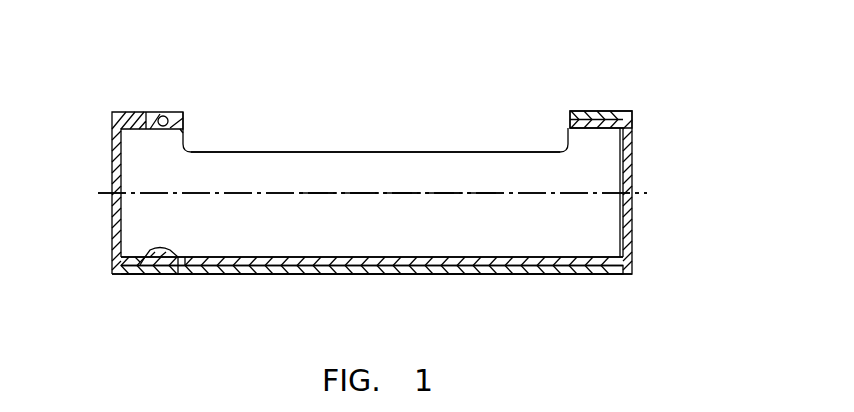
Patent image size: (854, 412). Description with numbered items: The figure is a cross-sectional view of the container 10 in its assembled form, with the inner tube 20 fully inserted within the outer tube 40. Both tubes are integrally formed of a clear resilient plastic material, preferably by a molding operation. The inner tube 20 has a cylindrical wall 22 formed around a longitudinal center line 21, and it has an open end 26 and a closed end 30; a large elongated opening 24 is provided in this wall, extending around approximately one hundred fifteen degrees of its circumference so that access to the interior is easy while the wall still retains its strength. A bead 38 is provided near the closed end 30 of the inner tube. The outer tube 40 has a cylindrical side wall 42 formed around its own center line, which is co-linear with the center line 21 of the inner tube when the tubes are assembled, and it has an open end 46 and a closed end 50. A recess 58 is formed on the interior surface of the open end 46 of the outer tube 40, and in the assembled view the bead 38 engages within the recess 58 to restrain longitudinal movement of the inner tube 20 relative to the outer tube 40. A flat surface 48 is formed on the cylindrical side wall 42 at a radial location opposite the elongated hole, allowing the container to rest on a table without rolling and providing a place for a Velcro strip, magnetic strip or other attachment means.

The container 10 is at (579, 110).
The inner tube 20 is at (124, 92).
The longitudinal center line 21 is at (532, 193).
The cylindrical wall 22 is at (327, 263).
The elongated opening 24 is at (347, 141).
The open end 26 is at (607, 113).
The closed end 30 is at (113, 168).
The bead 38 is at (184, 131).
The outer tube 40 is at (549, 291).
The cylindrical side wall 42 is at (367, 273).
The open end 46 is at (210, 275).
The flat surface 48 is at (482, 275).
The closed end 50 is at (632, 138).
The recess 58 is at (163, 117).